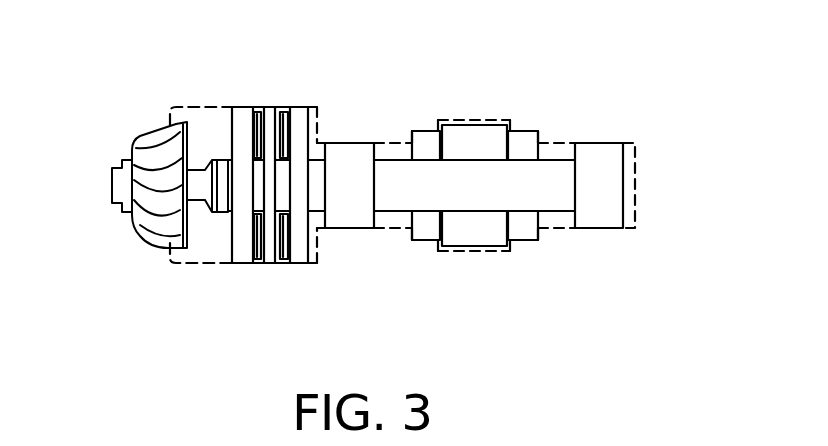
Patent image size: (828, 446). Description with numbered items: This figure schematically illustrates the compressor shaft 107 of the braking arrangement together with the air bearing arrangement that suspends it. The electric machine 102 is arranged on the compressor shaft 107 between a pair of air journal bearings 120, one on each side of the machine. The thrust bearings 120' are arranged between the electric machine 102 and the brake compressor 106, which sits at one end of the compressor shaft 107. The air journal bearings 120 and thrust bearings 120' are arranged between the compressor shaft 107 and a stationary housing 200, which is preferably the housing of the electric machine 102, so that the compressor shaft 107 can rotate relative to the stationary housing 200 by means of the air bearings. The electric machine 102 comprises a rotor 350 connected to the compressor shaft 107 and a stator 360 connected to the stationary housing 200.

The electric machine 102 is at (538, 252).
The brake compressor 106 is at (158, 165).
The compressor shaft 107 is at (543, 185).
The air journal bearings 120 is at (509, 127).
The thrust bearings 120' is at (297, 144).
The stationary housing 200 is at (483, 119).
The rotor 350 is at (476, 228).
The stator 360 is at (426, 228).